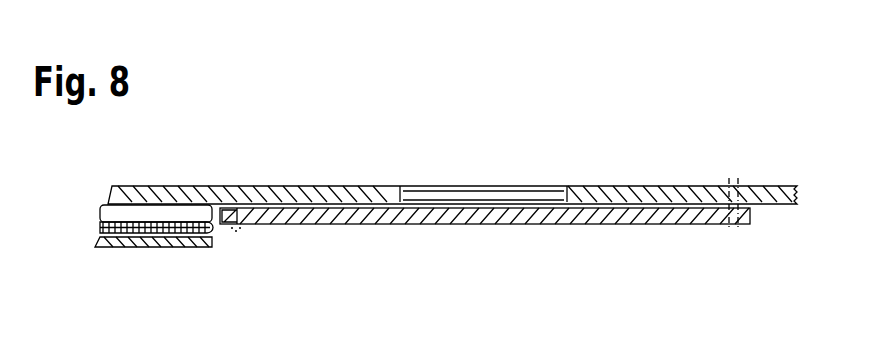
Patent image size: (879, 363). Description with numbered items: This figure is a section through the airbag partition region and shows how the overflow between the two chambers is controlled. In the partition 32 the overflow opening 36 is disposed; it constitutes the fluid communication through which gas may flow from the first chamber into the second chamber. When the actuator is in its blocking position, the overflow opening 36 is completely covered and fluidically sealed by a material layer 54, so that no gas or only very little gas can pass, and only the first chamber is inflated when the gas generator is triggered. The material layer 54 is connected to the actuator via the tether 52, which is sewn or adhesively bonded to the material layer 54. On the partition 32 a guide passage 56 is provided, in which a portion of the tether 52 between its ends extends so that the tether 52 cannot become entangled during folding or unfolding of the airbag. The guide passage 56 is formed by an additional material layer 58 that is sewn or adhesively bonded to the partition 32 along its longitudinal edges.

The partition 32 is at (605, 186).
The overflow opening 36 is at (475, 186).
The material layer 54 is at (515, 224).
The additional material layer 58 is at (200, 248).
The tether 52 is at (158, 248).
The guide passage 56 is at (125, 248).